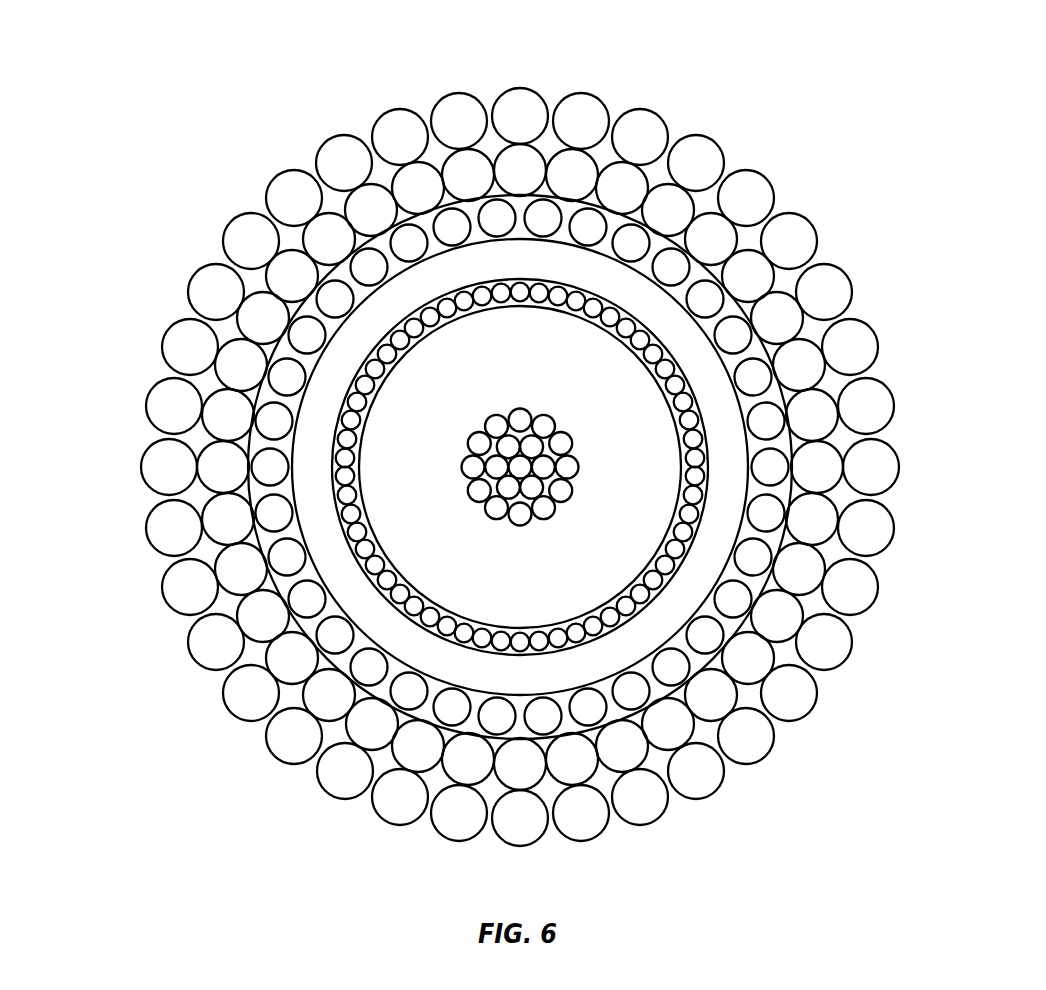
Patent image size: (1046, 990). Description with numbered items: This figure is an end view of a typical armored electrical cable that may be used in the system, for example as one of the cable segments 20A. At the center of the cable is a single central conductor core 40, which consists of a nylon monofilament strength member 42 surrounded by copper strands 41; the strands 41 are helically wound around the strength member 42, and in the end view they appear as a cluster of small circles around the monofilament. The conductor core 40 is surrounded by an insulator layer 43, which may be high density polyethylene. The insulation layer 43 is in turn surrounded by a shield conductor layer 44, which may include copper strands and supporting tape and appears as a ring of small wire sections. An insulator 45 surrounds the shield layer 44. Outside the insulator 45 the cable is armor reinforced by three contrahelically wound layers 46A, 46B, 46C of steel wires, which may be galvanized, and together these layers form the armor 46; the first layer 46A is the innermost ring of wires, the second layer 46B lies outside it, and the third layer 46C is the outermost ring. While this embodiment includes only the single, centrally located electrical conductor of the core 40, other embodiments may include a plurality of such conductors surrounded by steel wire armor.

The cable segment 20A is at (766, 86).
The central conductor core 40 is at (530, 543).
The copper strands 41 is at (550, 527).
The nylon monofilament strength member 42 is at (537, 417).
The insulator layer 43 is at (637, 433).
The shield conductor layer 44 is at (397, 610).
The insulator 45 is at (327, 560).
The armor 46 is at (165, 340).
The first armor layer 46A is at (408, 232).
The second armor layer 46B is at (292, 260).
The third armor layer 46C is at (230, 228).